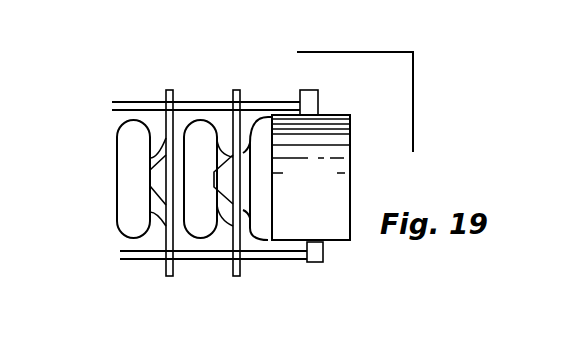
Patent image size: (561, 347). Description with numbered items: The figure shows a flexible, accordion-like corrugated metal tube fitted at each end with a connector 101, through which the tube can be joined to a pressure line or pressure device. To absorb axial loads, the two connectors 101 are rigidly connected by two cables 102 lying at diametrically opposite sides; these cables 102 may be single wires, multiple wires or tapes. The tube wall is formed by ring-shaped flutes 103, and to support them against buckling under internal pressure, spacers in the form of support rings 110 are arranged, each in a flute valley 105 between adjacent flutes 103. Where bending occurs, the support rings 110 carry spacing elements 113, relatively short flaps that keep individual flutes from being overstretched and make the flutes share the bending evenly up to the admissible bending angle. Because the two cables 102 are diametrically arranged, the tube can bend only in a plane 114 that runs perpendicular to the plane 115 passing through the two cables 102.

The connector 101 is at (325, 227).
The cable 102 is at (253, 103).
The ring-shaped flute 103 is at (203, 219).
The flute valley 105 is at (157, 216).
The support ring 110 is at (167, 89).
The spacing element 113 is at (158, 183).
The bending plane 114 is at (229, 91).
The cable plane 115 is at (392, 97).